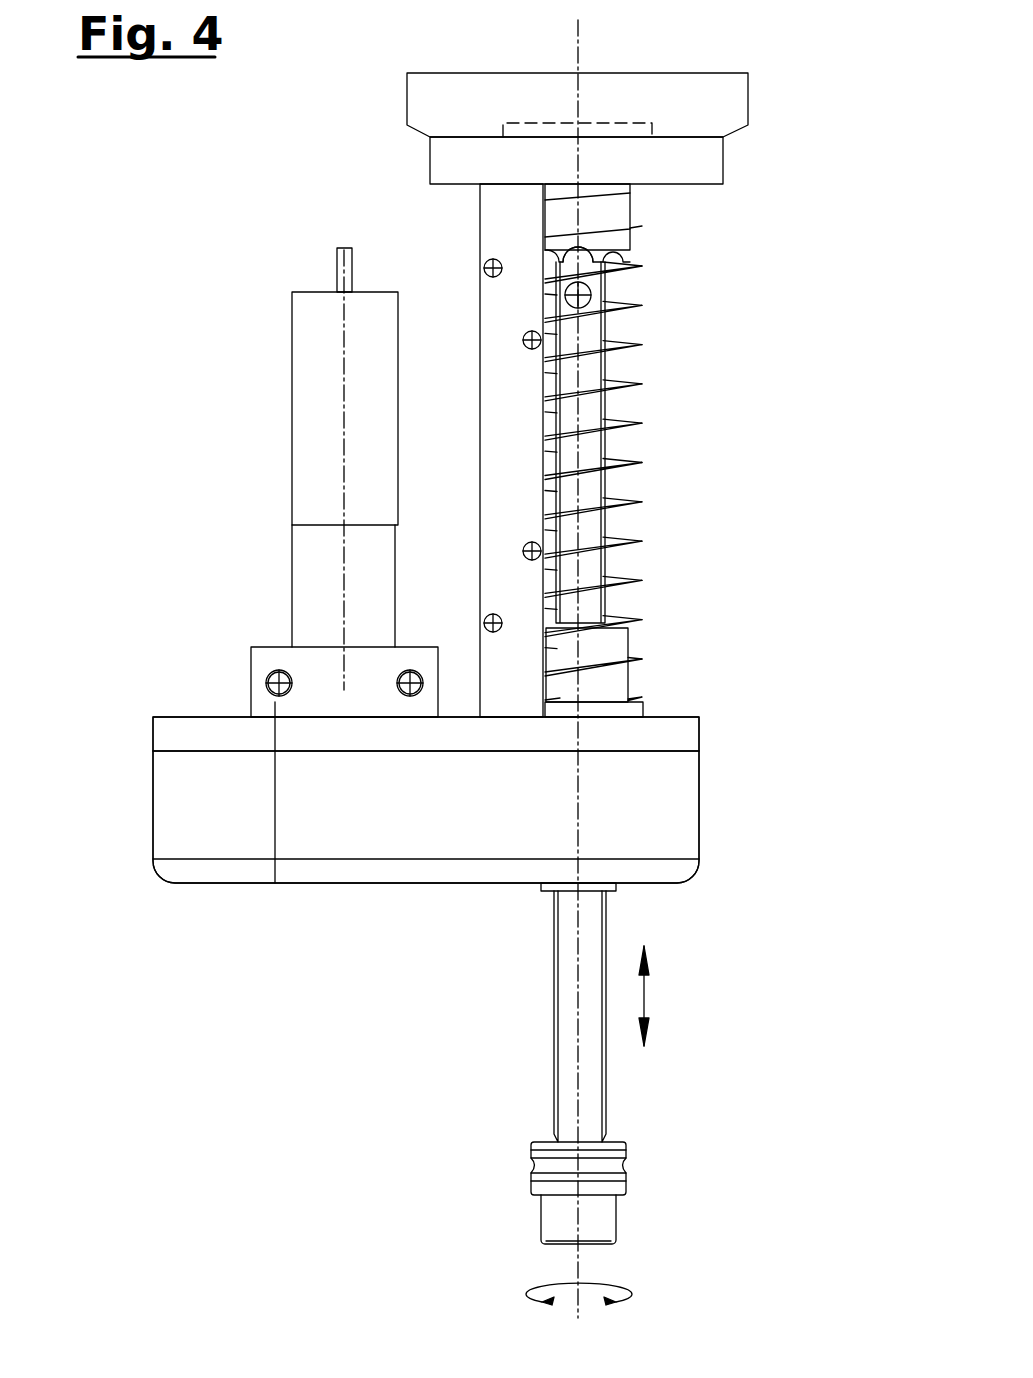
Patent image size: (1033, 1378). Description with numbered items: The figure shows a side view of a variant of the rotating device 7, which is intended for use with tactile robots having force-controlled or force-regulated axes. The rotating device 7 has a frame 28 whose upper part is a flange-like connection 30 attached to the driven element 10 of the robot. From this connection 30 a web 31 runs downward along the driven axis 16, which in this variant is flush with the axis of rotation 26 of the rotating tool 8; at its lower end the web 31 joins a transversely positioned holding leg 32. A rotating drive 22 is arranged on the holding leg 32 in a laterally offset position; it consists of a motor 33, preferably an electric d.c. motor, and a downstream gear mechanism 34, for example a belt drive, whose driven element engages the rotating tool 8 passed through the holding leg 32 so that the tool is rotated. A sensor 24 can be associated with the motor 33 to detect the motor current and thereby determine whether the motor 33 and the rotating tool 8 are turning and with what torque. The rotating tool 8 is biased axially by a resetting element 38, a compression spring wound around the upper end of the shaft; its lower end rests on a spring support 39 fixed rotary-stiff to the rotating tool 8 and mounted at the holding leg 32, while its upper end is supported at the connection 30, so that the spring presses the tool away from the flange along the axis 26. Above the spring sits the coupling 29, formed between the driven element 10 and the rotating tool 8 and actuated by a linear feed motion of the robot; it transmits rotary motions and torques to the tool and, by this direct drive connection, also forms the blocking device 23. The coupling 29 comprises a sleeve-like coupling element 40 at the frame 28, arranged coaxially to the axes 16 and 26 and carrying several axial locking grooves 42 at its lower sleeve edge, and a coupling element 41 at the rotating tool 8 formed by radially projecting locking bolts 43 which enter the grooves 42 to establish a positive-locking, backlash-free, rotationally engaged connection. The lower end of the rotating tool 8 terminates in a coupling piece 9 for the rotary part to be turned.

The rotating device 7 is at (272, 469).
The rotating tool 8 is at (569, 1040).
The coupling piece 9 is at (556, 1223).
The driven element 10 is at (425, 108).
The driven axis 16 is at (580, 62).
The rotating drive 22 is at (314, 469).
The blocking device 23 is at (648, 366).
The sensor 24 is at (288, 556).
The axis of rotation 26 is at (581, 1256).
The frame 28 is at (690, 717).
The coupling 29 is at (593, 217).
The connection 30 is at (442, 160).
The web 31 is at (505, 367).
The holding leg 32 is at (172, 775).
The motor 33 is at (377, 437).
The gear mechanism 34 is at (414, 812).
The resetting element 38 is at (633, 503).
The spring support 39 is at (608, 655).
The coupling element 40 is at (618, 247).
The coupling element 41 is at (685, 311).
The locking grooves 42 is at (573, 252).
The locking bolts 43 is at (578, 295).